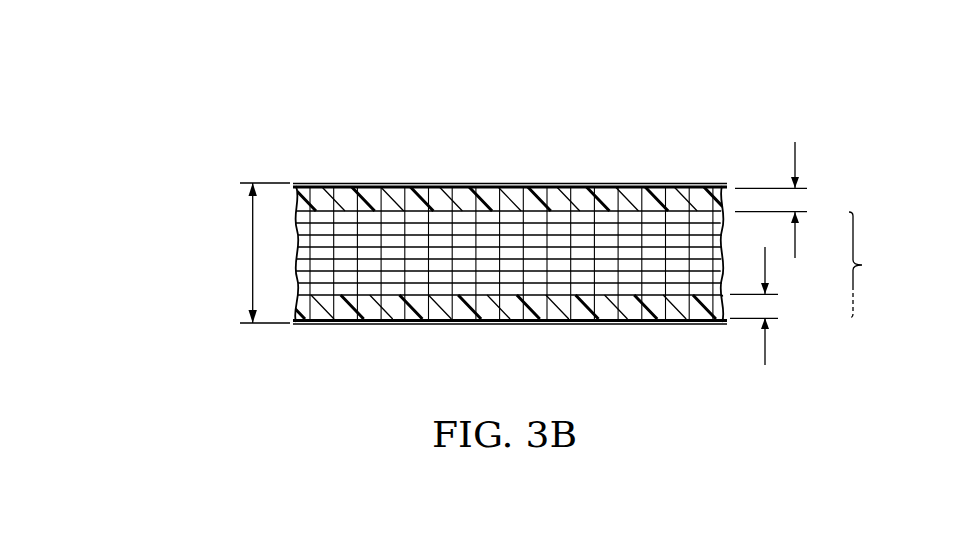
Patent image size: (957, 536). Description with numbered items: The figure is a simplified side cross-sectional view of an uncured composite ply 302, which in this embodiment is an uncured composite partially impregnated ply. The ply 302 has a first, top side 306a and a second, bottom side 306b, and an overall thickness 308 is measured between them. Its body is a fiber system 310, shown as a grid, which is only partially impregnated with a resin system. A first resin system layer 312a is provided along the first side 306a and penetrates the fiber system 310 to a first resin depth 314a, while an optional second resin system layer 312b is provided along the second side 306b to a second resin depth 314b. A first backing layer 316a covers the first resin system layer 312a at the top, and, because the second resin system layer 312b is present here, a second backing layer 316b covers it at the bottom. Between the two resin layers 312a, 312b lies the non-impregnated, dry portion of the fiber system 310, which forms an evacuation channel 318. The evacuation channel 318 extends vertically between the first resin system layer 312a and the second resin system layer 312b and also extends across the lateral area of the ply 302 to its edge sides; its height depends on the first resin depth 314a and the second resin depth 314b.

The uncured composite ply 302 is at (562, 78).
The first side 306a is at (442, 185).
The second side 306b is at (440, 323).
The overall thickness 308 is at (252, 253).
The fiber system 310 is at (508, 220).
The first resin system layer 312a is at (628, 207).
The second resin system layer 312b is at (607, 312).
The first resin depth 314a is at (795, 160).
The second resin depth 314b is at (765, 350).
The first backing layer 316a is at (346, 180).
The second backing layer 316b is at (344, 328).
The evacuation channel 318 is at (882, 265).